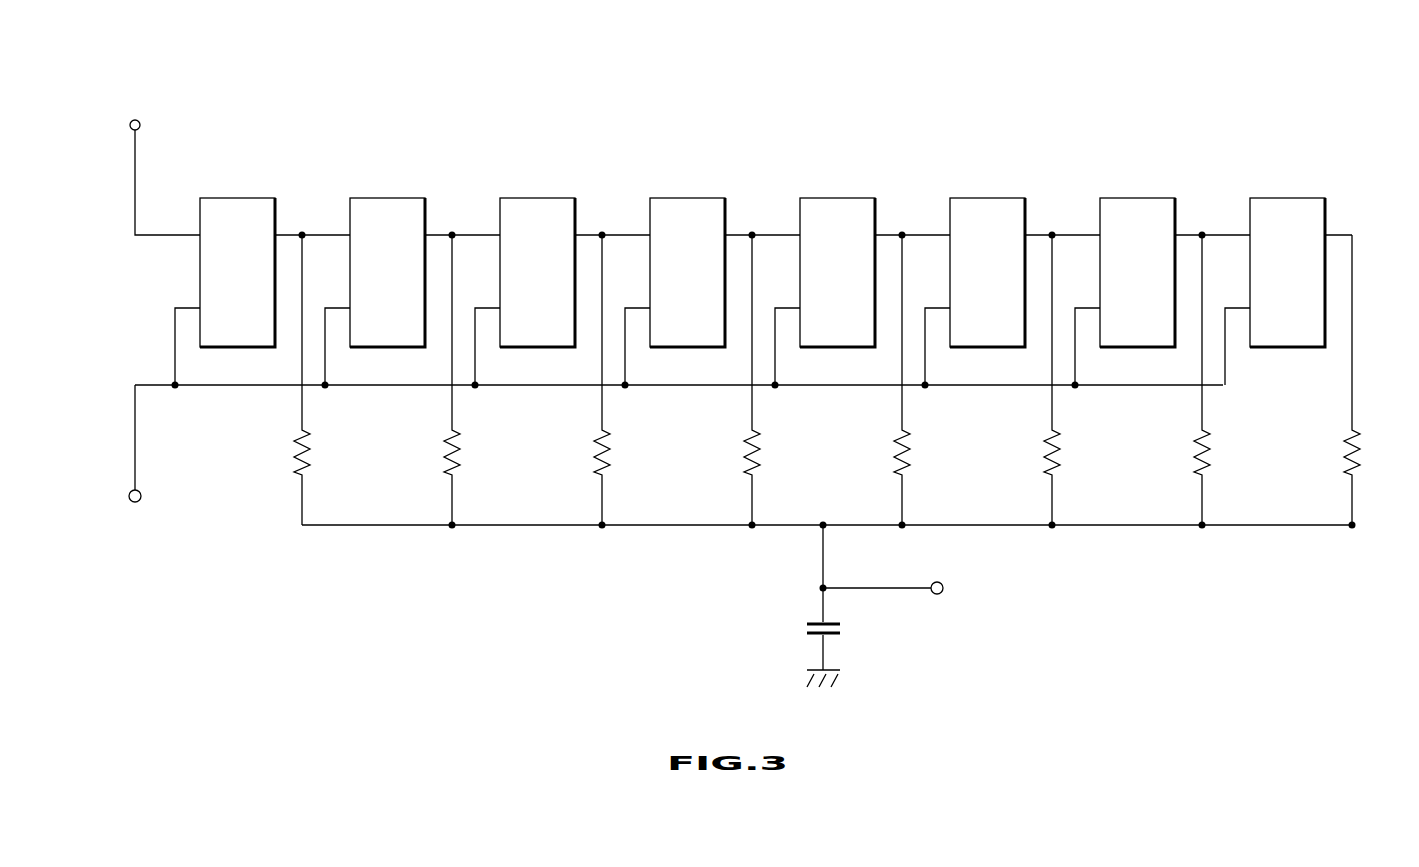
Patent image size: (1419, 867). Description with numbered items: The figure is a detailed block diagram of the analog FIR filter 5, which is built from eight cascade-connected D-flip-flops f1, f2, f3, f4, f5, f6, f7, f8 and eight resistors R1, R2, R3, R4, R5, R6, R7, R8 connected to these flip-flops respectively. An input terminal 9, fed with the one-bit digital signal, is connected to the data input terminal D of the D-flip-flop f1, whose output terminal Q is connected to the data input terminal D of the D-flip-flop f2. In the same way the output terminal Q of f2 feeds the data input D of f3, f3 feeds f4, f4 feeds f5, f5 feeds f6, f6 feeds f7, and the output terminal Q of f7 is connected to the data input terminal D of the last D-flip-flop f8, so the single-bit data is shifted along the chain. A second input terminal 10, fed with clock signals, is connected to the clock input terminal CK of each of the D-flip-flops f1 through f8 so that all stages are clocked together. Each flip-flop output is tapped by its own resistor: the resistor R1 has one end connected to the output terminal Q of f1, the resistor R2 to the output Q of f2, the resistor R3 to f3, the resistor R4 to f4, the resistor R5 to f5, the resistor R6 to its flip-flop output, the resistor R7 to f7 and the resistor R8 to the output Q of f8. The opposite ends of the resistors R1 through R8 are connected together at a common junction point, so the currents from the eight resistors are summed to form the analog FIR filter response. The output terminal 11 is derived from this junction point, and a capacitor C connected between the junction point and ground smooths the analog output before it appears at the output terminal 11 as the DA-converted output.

The analog FIR filter 5 is at (624, 130).
The input terminal 9 is at (132, 130).
The input terminal 10 is at (131, 490).
The output terminal 11 is at (942, 594).
The D-flip-flop f1 is at (240, 198).
The D-flip-flop f2 is at (390, 198).
The D-flip-flop f3 is at (540, 198).
The D-flip-flop f4 is at (690, 198).
The D-flip-flop f5 is at (840, 198).
The D-flip-flop f6 is at (990, 198).
The D-flip-flop f7 is at (1140, 198).
The D-flip-flop f8 is at (1290, 198).
The resistor R1 is at (310, 452).
The resistor R2 is at (460, 452).
The resistor R3 is at (610, 452).
The resistor R4 is at (760, 452).
The resistor R5 is at (910, 452).
The resistor R6 is at (1060, 452).
The resistor R7 is at (1210, 452).
The resistor R8 is at (1360, 452).
The capacitor C is at (839, 606).